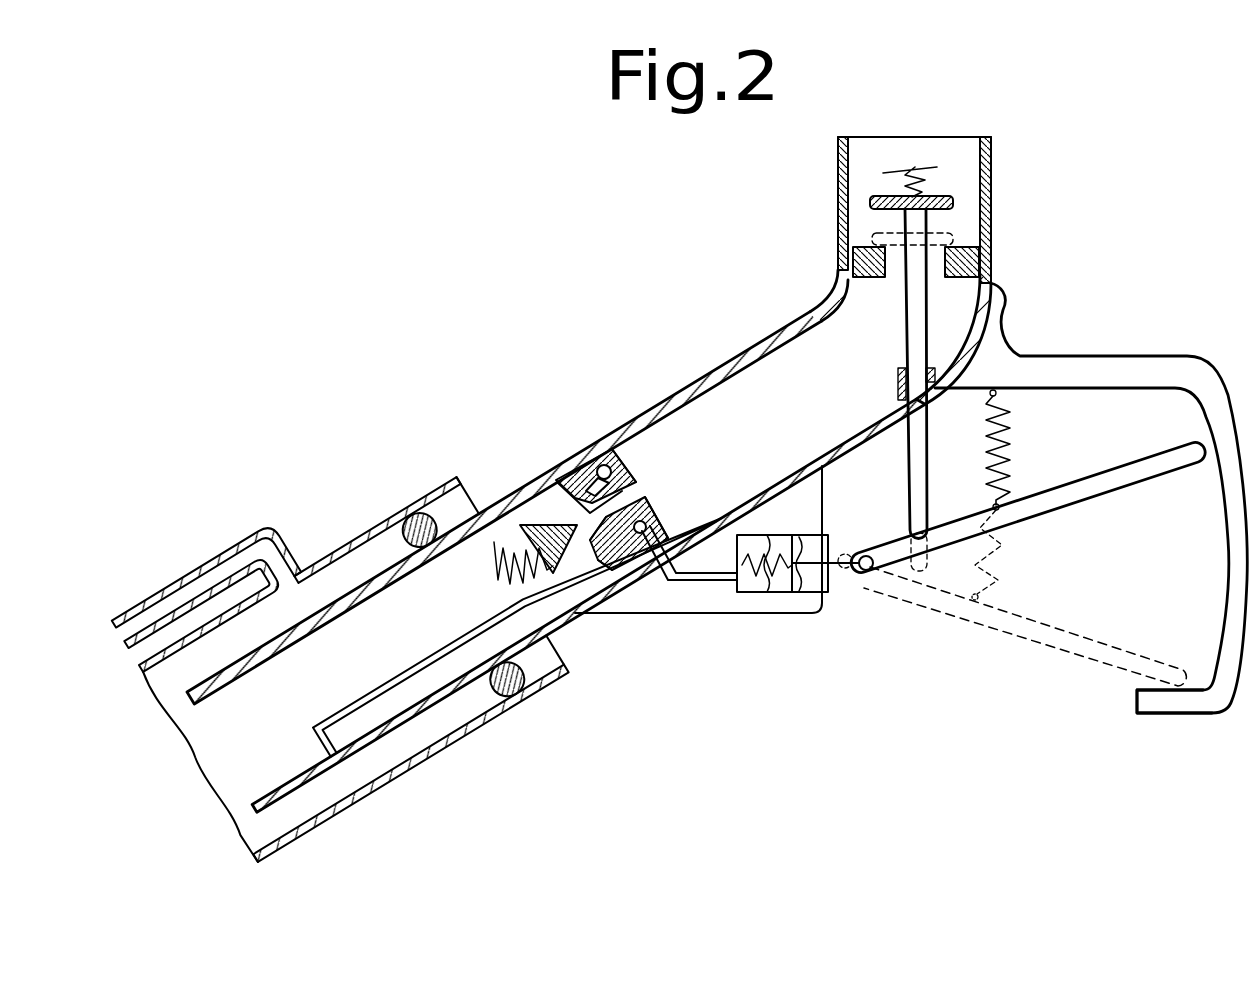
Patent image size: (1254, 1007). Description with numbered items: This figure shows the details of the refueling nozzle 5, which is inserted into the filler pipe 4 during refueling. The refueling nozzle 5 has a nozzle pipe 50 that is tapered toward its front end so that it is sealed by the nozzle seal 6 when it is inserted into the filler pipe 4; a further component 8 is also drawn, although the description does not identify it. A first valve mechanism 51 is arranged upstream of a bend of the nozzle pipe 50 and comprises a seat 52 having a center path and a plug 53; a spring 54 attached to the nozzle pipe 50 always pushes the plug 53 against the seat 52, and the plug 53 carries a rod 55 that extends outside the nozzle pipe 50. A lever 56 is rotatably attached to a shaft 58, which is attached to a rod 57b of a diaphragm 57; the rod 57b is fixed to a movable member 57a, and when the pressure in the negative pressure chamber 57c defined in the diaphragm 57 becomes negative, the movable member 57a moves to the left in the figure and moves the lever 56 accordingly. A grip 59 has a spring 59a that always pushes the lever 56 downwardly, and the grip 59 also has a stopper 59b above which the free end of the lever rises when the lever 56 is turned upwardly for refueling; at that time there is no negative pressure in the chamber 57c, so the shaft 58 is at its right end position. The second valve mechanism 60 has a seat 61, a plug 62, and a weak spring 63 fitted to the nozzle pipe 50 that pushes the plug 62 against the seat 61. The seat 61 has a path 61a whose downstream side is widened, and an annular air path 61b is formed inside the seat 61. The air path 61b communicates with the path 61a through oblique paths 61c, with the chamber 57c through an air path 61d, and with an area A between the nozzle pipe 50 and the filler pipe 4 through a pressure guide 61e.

The filler pipe 4 is at (358, 541).
The refueling nozzle 5 is at (504, 496).
The nozzle seal 6 is at (409, 510).
The sleeve 8 is at (243, 561).
The nozzle pipe 50 is at (760, 339).
The first valve mechanism 51 is at (968, 207).
The seat 52 is at (968, 260).
The plug 53 is at (870, 203).
The spring 54 is at (878, 186).
The rod 55 is at (918, 318).
The lever 56 is at (1128, 471).
The diaphragm 57 is at (720, 582).
The movable member 57a is at (797, 580).
The rod 57b is at (818, 597).
The negative pressure chamber 57c is at (748, 590).
The shaft 58 is at (870, 575).
The grip 59 is at (1091, 498).
The spring 59a is at (1022, 438).
The stopper 59b is at (1208, 474).
The second valve mechanism 60 is at (641, 426).
The seat 61 is at (641, 531).
The path 61a is at (642, 482).
The annular air path 61b is at (658, 512).
The oblique paths 61c is at (622, 583).
The air path 61d is at (688, 580).
The pressure guide 61e is at (408, 680).
The plug 62 is at (531, 519).
The weak spring 63 is at (505, 576).
The area A is at (344, 782).